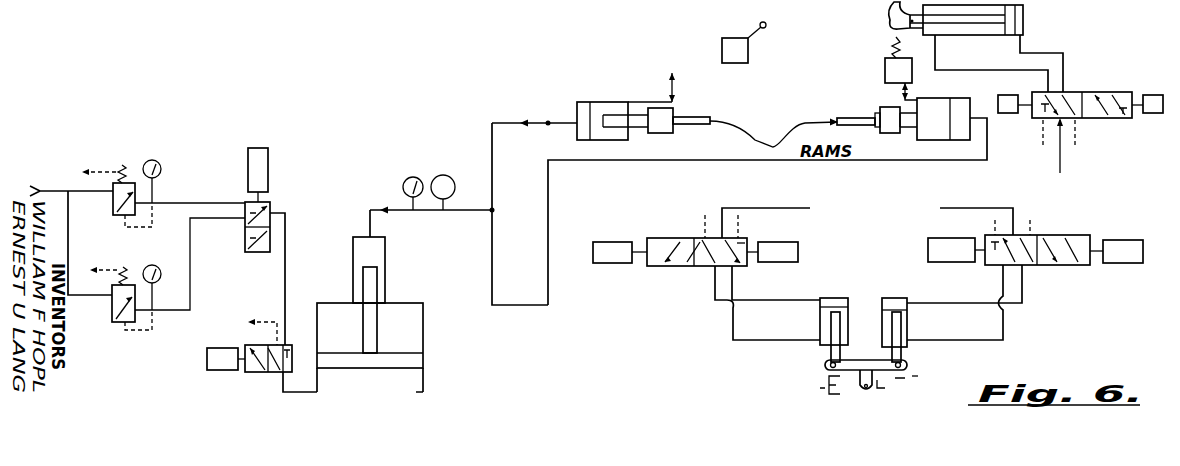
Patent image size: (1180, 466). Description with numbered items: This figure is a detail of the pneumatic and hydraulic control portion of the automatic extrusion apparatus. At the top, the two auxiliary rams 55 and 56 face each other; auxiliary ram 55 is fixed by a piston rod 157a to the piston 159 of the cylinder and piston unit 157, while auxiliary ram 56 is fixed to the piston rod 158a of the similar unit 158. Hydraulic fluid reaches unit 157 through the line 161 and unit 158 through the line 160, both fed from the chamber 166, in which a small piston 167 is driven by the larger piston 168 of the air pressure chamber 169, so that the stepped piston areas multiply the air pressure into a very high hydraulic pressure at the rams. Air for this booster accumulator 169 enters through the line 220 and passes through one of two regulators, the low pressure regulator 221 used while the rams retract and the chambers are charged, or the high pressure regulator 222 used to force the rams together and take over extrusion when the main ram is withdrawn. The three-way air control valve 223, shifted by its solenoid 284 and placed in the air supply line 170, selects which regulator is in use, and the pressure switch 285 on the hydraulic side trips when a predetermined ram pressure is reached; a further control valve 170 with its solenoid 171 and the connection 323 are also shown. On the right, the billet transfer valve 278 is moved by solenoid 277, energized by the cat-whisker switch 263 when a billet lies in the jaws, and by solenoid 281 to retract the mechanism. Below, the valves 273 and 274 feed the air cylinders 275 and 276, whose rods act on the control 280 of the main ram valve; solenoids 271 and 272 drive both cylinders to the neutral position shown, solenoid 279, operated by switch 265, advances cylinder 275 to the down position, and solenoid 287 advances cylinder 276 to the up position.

The auxiliary ram 55 is at (694, 118).
The auxiliary ram 56 is at (866, 108).
The cylinder and piston unit 157 is at (588, 100).
The piston rod 157a is at (640, 133).
The cylinder and piston unit 158 is at (951, 95).
The piston rod 158a is at (912, 135).
The piston 159 is at (605, 105).
The hydraulic line 160 is at (553, 189).
The hydraulic line 161 is at (550, 103).
The chamber 166 is at (388, 244).
The piston 167 is at (380, 284).
The piston 168 is at (423, 357).
The air pressure chamber 169 is at (420, 391).
The air supply line 170 is at (270, 372).
The solenoid 171 is at (238, 372).
The air supply line 220 is at (54, 189).
The low pressure regulator 221 is at (111, 207).
The high pressure regulator 222 is at (110, 321).
The three-way air control valve 223 is at (272, 203).
The cat-whisker switch 263 is at (885, 70).
The switch 265 is at (722, 53).
The solenoid 271 is at (798, 251).
The solenoid 272 is at (927, 250).
The valve 273 is at (707, 267).
The valve 274 is at (1028, 265).
The air cylinder 275 is at (820, 317).
The air cylinder 276 is at (910, 322).
The solenoid 277 is at (1158, 95).
The valve 278 is at (1100, 85).
The solenoid 279 is at (612, 265).
The control 280 is at (825, 366).
The solenoid 281 is at (1010, 114).
The solenoid 284 is at (247, 165).
The pressure switch 285 is at (453, 157).
The solenoid 287 is at (1118, 267).
The electrical connection 323 is at (676, 75).